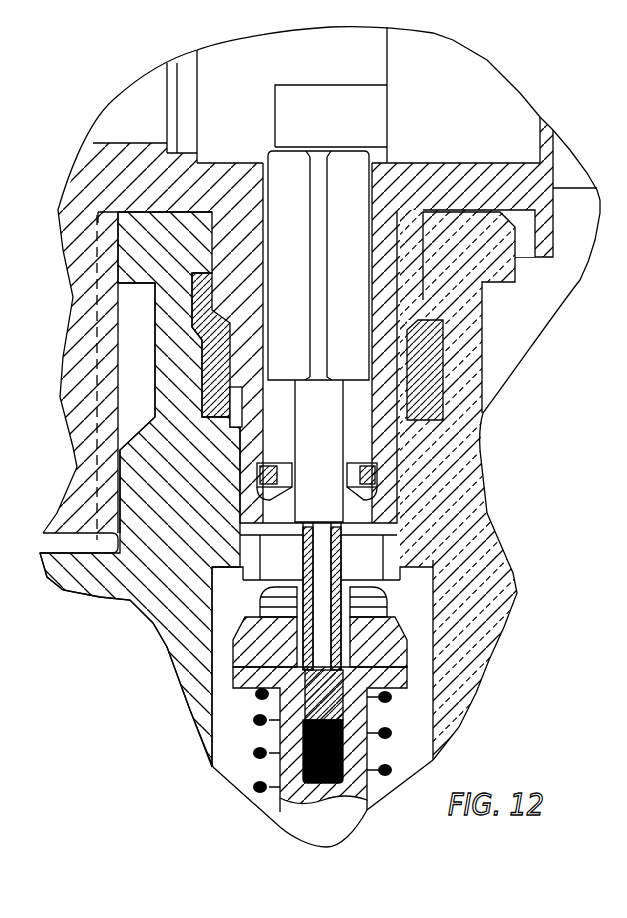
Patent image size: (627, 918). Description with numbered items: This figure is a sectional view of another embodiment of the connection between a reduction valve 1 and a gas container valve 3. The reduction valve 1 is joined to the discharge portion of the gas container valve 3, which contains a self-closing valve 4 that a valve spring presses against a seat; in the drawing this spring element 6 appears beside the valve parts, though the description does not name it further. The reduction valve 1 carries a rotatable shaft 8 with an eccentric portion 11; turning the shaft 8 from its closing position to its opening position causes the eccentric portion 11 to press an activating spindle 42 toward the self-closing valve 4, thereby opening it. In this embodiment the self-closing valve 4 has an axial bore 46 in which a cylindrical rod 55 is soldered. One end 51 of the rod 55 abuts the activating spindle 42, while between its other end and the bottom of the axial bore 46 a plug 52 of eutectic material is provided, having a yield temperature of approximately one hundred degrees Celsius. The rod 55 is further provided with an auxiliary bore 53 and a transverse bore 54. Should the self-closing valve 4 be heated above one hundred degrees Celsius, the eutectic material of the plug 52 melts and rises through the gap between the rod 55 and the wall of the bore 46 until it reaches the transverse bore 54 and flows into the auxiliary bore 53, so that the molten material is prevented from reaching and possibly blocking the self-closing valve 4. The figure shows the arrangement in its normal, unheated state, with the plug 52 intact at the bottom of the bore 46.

The reduction valve 1 is at (118, 178).
The gas container valve 3 is at (457, 490).
The self-closing valve 4 is at (385, 678).
The compression spring 6 is at (393, 735).
The rotatable shaft 8 is at (470, 141).
The eccentric portion 11 is at (333, 115).
The activating spindle 42 is at (273, 230).
The axial bore 46 is at (290, 737).
The end of the rod 51 is at (300, 537).
The plug of eutectic material 52 is at (307, 757).
The auxiliary bore 53 is at (322, 578).
The transverse bore 54 is at (300, 698).
The cylindrical rod 55 is at (268, 608).